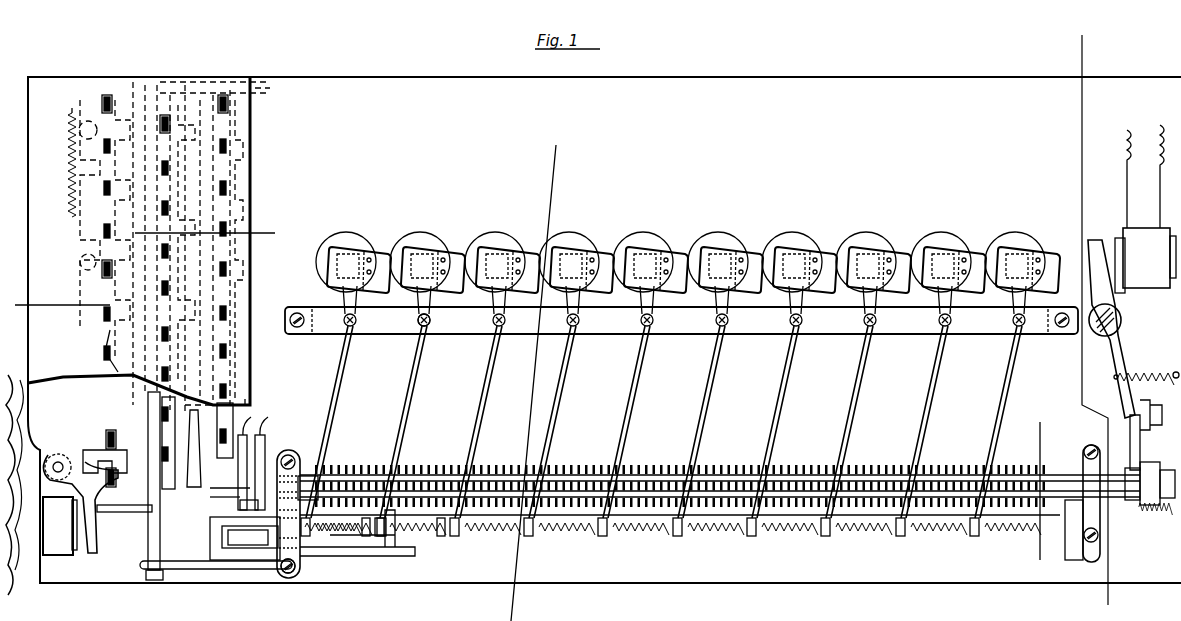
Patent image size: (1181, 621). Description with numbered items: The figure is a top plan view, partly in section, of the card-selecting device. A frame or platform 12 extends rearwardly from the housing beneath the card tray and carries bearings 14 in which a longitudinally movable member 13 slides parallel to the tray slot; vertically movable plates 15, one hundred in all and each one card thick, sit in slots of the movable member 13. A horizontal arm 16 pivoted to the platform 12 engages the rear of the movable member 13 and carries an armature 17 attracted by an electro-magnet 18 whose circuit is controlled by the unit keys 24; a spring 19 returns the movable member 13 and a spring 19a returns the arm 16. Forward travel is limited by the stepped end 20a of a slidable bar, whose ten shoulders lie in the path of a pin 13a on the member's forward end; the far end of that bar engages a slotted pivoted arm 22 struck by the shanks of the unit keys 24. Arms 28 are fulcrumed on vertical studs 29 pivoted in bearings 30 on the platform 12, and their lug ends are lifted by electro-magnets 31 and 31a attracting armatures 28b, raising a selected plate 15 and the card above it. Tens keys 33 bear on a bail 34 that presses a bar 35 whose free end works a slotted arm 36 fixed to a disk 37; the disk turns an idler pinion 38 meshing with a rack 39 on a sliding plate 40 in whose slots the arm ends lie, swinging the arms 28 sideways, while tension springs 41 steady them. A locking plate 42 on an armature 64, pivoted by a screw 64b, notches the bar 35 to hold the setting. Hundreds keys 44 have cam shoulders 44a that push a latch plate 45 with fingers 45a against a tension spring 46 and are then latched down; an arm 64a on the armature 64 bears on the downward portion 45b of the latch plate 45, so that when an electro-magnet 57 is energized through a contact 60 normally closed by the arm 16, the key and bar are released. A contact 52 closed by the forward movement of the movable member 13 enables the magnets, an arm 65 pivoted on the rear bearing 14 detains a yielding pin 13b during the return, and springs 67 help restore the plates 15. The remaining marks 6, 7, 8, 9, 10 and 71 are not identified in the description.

The keyboard section line 6 is at (160, 330).
The section line 7 is at (533, 372).
The section line 8 is at (1092, 318).
The contact line 9 is at (207, 235).
The rod 10 is at (1039, 490).
The frame or platform 12 is at (777, 88).
The longitudinally movable member 13 is at (500, 470).
The pin or shoulder 13a is at (222, 495).
The yielding pin 13b is at (1110, 520).
The bearings 14 is at (288, 453).
The vertically movable plates 15 is at (663, 465).
The horizontal arm 16 is at (1108, 358).
The armature 17 is at (1090, 250).
The electro-magnet 18 is at (1149, 206).
The spring 19 is at (1147, 510).
The spring 19a is at (1143, 374).
The end of slidable bar 20a is at (198, 466).
The pivoted arm 22 is at (248, 410).
The unit keys 24 is at (224, 226).
The arms 28 is at (334, 398).
The armatures 28b is at (606, 262).
The vertical pins or studs 29 is at (430, 330).
The bearings 30 is at (765, 336).
The electro-magnets 31 is at (505, 238).
The electro-magnet 31a is at (346, 238).
The tens keys 33 is at (163, 163).
The bail 34 is at (165, 432).
The bar 35 is at (160, 541).
The slotted arm 36 is at (190, 570).
The disk 37 is at (250, 562).
The idler pinion 38 is at (305, 560).
The rack 39 is at (362, 557).
The sliding plate 40 is at (582, 534).
The tension springs 41 is at (500, 533).
The locking plate 42 is at (135, 512).
The hundreds keys 44 is at (106, 186).
The shoulders 44a is at (106, 440).
The latch plate 45 is at (82, 290).
The fingers 45a is at (125, 452).
The downward portion 45b is at (109, 471).
The tension spring 46 is at (72, 140).
The contact 52 is at (240, 504).
The electro-magnet 57 is at (60, 526).
The contact 60 is at (1150, 430).
The armature 64 is at (92, 556).
The arm 64a is at (100, 456).
The screw 64b is at (54, 476).
The arm 65 is at (1068, 537).
The springs 67 is at (433, 470).
The feet 71 is at (830, 532).